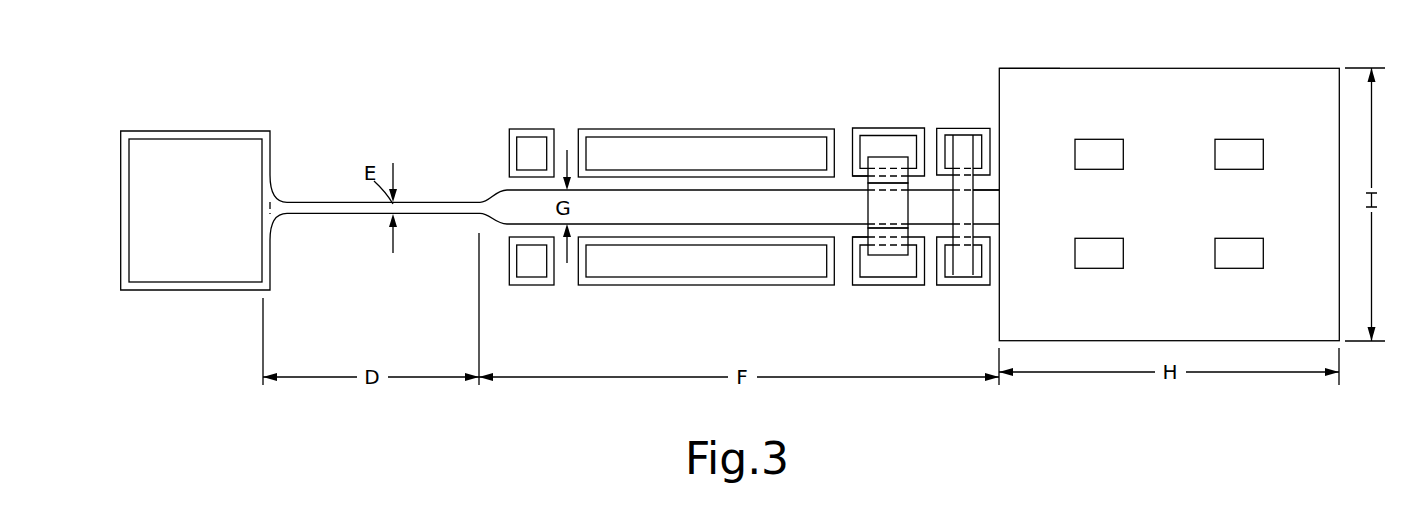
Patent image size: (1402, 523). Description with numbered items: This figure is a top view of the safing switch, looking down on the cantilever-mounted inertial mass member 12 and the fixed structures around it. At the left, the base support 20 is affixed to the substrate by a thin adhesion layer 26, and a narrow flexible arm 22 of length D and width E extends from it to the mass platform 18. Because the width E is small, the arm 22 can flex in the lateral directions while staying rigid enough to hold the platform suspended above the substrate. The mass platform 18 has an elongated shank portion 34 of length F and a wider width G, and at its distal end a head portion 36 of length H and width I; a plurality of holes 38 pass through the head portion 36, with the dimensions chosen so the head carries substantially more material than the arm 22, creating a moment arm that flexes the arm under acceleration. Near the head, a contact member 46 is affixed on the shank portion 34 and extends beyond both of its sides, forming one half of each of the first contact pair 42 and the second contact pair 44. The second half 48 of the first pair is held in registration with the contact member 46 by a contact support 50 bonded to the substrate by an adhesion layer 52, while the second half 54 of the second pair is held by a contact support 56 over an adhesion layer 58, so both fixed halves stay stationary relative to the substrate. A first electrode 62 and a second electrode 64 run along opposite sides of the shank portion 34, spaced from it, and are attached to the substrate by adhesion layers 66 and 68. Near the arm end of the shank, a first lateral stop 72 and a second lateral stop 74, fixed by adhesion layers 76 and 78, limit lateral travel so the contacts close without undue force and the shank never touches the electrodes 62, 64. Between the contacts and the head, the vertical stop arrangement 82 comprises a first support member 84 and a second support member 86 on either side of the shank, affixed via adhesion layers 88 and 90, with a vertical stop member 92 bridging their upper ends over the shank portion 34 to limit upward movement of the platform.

The inertial mass member 12 is at (444, 190).
The mass platform 18 is at (1166, 55).
The base support 20 is at (163, 150).
The flexible arm 22 is at (322, 208).
The adhesion layer 26 is at (233, 134).
The shank portion 34 is at (491, 226).
The head portion 36 is at (1038, 80).
The holes 38 is at (1228, 153).
The first contact pair 42 is at (851, 175).
The second contact pair 44 is at (851, 236).
The contact member 46 is at (878, 204).
The second half of first contact pair 48 is at (890, 162).
The contact support 50 is at (872, 143).
The adhesion layer 52 is at (910, 132).
The second half of second contact pair 54 is at (890, 250).
The contact support 56 is at (872, 270).
The adhesion layer 58 is at (910, 280).
The first electrode 62 is at (716, 142).
The second electrode 64 is at (716, 273).
The adhesion layer 66 is at (688, 133).
The adhesion layer 68 is at (688, 278).
The first lateral stop 72 is at (537, 143).
The second lateral stop 74 is at (537, 272).
The adhesion layer 76 is at (524, 135).
The adhesion layer 78 is at (524, 276).
The vertical stop arrangement 82 is at (992, 200).
The first support member 84 is at (977, 150).
The second support member 86 is at (977, 258).
The adhesion layer 88 is at (970, 128).
The adhesion layer 90 is at (970, 285).
The vertical stop member 92 is at (968, 214).